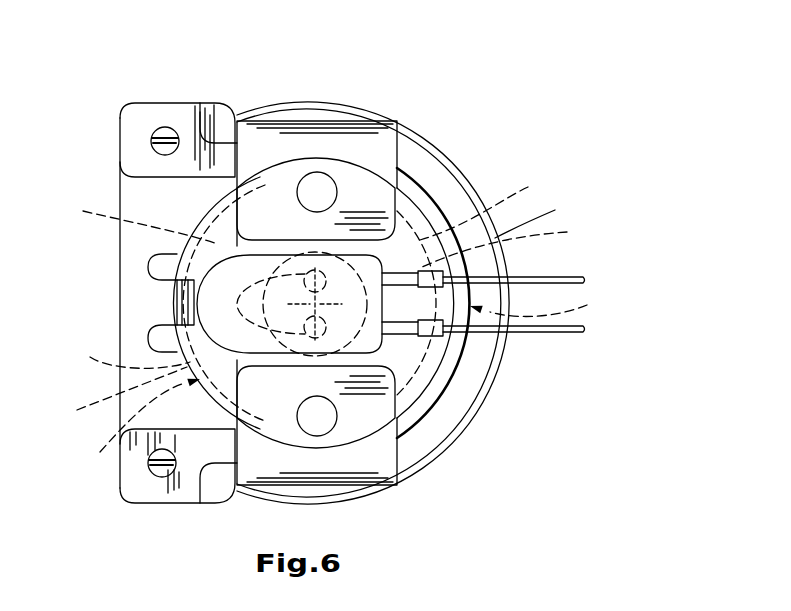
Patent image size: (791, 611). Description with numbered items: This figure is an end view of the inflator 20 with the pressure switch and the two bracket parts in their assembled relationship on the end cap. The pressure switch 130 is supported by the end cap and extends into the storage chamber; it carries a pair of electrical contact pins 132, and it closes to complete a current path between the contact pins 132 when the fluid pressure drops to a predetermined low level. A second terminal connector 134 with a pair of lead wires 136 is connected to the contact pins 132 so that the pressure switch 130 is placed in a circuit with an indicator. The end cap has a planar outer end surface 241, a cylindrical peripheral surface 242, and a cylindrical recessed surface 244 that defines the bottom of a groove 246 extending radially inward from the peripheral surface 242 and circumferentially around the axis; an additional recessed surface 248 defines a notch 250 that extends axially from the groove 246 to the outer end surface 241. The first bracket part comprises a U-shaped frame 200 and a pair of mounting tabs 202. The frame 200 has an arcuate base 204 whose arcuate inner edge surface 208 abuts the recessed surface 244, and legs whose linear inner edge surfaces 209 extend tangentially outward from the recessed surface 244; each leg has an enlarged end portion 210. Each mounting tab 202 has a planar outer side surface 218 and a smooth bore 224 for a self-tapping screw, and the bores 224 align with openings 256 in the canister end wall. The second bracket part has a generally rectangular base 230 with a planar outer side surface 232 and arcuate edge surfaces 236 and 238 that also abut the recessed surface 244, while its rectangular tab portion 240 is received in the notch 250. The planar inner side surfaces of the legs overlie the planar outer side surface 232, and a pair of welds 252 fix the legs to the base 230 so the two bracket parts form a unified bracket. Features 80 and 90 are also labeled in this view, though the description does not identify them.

The inflator 20 is at (522, 91).
The housing 80 is at (423, 160).
The housing wall 90 is at (415, 152).
The pressure switch 130 is at (368, 333).
The electrical contact pins 132 is at (289, 304).
The second terminal connector 134 is at (392, 336).
The lead wires 136 is at (583, 280).
The U-shaped frame 200 is at (442, 180).
The mounting tabs 202 is at (290, 128).
The arcuate base 204 is at (455, 192).
The arcuate inner edge surface 208 is at (497, 206).
The linear inner edge surface 209 is at (200, 178).
The enlarged end portion 210 is at (163, 118).
The planar outer side surface 218 is at (357, 140).
The smooth bores 224 is at (302, 213).
The generally rectangular base 230 is at (230, 138).
The planar outer side surface 232 is at (207, 113).
The arcuate edge surface 236 is at (127, 218).
The arcuate edge surface 238 is at (118, 352).
The rectangular tab portion 240 is at (180, 300).
The planar outer end surface 241 is at (548, 217).
The cylindrical peripheral surface 242 is at (477, 300).
The cylindrical recessed surface 244 is at (323, 323).
The groove 246 is at (345, 381).
The additional recessed surface 248 is at (177, 315).
The notch 250 is at (152, 288).
The welds 252 is at (147, 140).
The openings 256 is at (107, 178).